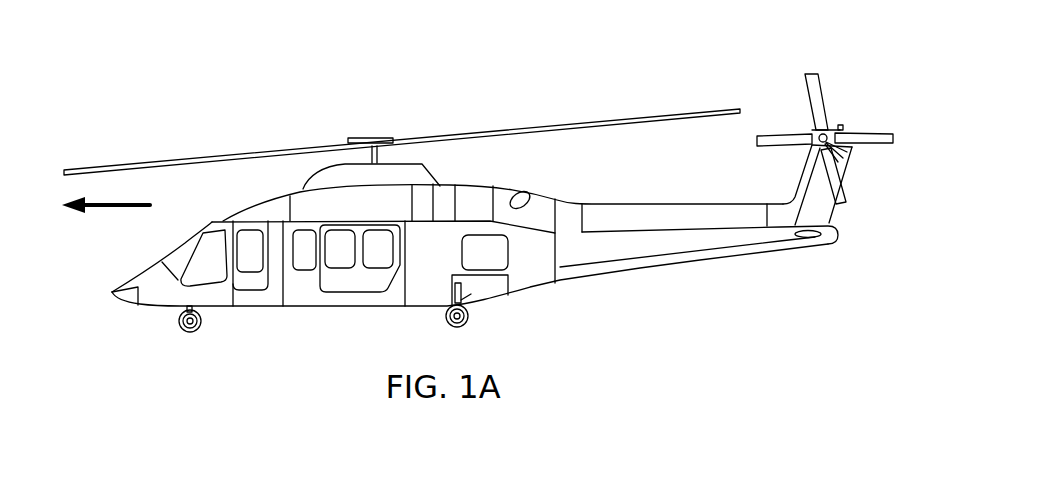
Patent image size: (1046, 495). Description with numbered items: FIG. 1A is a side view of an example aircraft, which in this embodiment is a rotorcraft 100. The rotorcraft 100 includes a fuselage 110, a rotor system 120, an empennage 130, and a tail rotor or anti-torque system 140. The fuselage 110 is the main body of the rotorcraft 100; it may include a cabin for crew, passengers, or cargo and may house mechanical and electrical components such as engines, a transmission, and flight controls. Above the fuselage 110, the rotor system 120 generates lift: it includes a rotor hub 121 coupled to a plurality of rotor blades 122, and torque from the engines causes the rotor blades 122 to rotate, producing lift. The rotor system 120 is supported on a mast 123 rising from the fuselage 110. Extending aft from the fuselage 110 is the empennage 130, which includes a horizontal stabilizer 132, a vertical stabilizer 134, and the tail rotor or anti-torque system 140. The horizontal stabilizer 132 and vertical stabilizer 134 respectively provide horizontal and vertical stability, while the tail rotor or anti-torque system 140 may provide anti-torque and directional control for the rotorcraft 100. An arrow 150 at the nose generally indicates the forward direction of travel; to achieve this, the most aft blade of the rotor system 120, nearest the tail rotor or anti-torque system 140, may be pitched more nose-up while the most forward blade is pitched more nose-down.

The rotorcraft 100 is at (258, 78).
The fuselage 110 is at (305, 309).
The rotor system 120 is at (393, 118).
The rotor hub 121 is at (360, 138).
The rotor blades 122 is at (207, 155).
The mast 123 is at (380, 158).
The empennage 130 is at (693, 264).
The horizontal stabilizer 132 is at (812, 243).
The vertical stabilizer 134 is at (790, 187).
The tail rotor or anti-torque system 140 is at (848, 110).
The arrow 150 is at (116, 209).